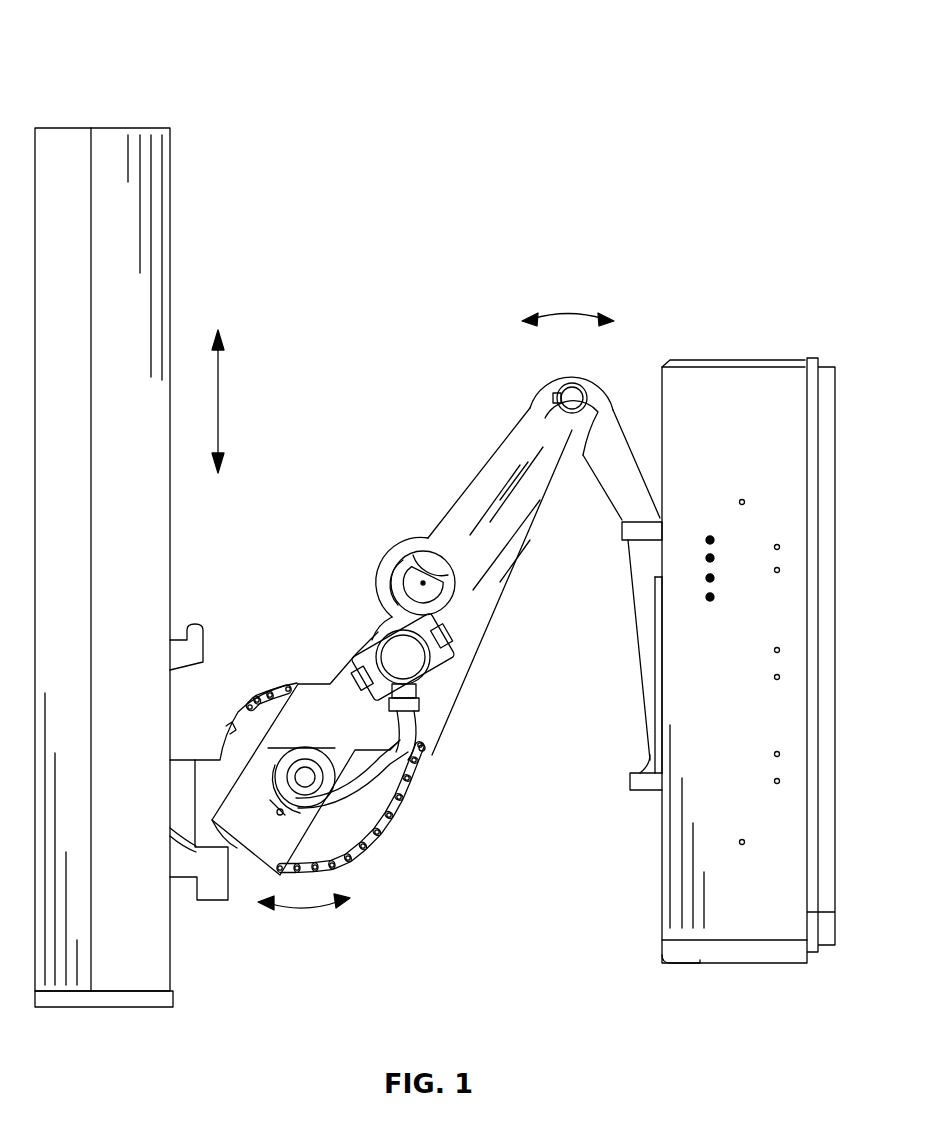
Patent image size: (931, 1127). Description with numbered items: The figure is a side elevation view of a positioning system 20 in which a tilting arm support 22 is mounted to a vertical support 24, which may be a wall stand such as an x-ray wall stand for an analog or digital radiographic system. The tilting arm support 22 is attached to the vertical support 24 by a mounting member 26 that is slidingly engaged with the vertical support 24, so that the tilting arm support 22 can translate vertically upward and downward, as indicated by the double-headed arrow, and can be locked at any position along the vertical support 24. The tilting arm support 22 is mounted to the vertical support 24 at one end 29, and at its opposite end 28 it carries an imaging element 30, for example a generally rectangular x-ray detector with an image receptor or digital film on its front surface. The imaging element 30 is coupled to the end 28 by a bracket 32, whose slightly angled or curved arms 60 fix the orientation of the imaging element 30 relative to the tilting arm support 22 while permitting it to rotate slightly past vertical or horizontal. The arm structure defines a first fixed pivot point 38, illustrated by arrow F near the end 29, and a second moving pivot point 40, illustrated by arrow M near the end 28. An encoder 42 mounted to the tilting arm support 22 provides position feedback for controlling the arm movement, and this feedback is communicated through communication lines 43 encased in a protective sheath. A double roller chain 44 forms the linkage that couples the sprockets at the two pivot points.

The positioning system 20 is at (100, 46).
The tilting arm support 22 is at (345, 508).
The vertical support 24 is at (172, 265).
The mounting member 26 is at (192, 906).
The end 28 is at (642, 362).
The end 29 is at (215, 706).
The imaging element 30 is at (776, 334).
The bracket 32 is at (636, 630).
The first fixed pivot point 38 is at (307, 772).
The second moving pivot point 40 is at (560, 392).
The encoder 42 is at (412, 665).
The communication lines 43 is at (367, 768).
The chains 44 is at (385, 823).
The arms 60 is at (623, 493).